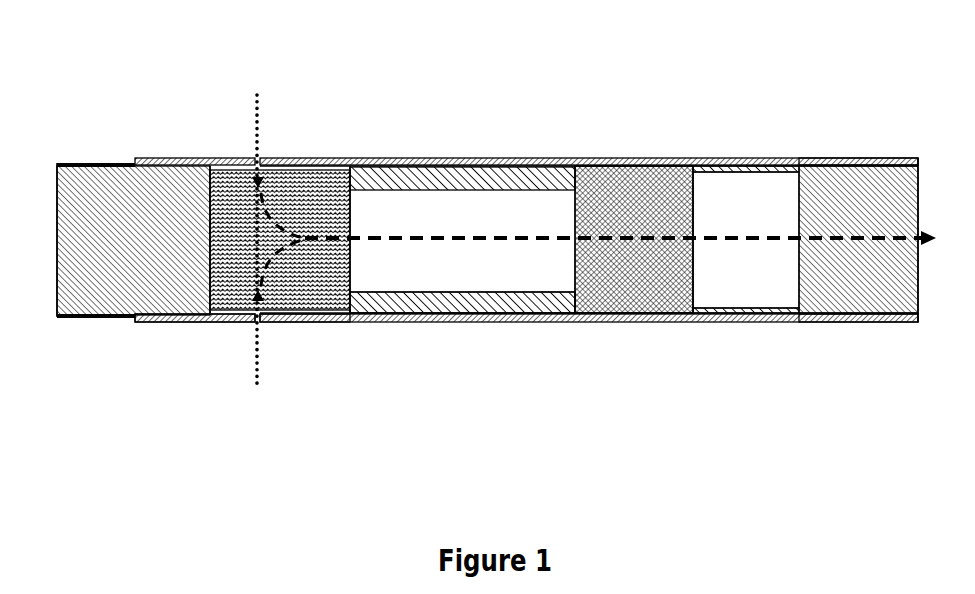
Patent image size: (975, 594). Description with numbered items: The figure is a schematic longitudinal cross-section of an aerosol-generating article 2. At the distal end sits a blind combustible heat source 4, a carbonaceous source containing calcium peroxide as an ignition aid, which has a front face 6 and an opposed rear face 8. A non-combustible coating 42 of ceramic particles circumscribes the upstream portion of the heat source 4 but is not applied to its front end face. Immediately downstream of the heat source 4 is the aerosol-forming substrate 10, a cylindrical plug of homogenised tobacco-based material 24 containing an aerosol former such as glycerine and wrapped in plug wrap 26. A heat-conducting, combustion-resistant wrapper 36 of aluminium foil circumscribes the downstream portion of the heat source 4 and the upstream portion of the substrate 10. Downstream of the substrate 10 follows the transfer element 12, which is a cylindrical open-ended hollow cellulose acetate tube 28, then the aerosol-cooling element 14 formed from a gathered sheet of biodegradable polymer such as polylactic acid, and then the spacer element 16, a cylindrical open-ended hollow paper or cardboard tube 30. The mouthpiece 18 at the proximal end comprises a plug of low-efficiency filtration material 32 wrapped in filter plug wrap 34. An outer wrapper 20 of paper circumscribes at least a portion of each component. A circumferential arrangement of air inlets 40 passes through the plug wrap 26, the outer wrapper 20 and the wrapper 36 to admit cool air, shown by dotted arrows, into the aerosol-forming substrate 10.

The aerosol-generating article 2 is at (678, 122).
The blind combustible heat source 4 is at (91, 181).
The front face 6 is at (55, 240).
The rear face 8 is at (210, 240).
The aerosol-forming substrate 10 is at (331, 204).
The transfer element 12 is at (462, 205).
The aerosol-cooling element 14 is at (643, 268).
The spacer element 16 is at (751, 270).
The mouthpiece 18 is at (839, 190).
The outer wrapper 20 is at (600, 158).
The homogenised tobacco-based material 24 is at (325, 315).
The plug wrap 26 is at (275, 314).
The hollow cellulose acetate tube 28 is at (412, 312).
The hollow paper or cardboard tube 30 is at (745, 312).
The filtration material 32 is at (855, 267).
The filter plug wrap 34 is at (857, 158).
The heat-conducting, combustion-resistant wrapper 36 is at (215, 321).
The air inlets 40 is at (247, 141).
The non-combustible coating 42 is at (115, 316).